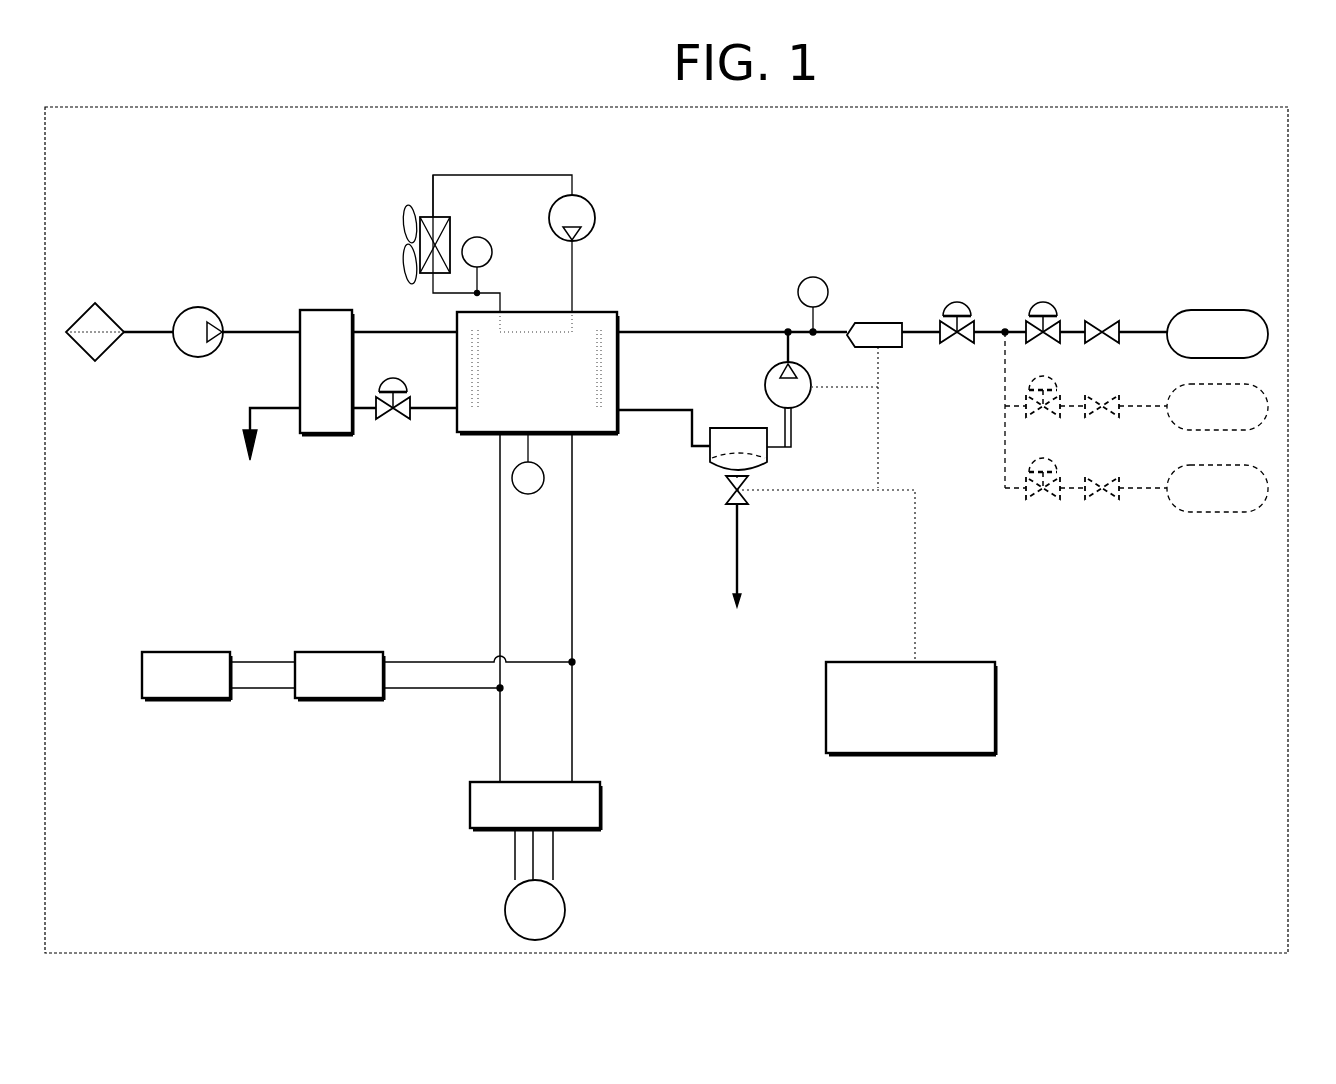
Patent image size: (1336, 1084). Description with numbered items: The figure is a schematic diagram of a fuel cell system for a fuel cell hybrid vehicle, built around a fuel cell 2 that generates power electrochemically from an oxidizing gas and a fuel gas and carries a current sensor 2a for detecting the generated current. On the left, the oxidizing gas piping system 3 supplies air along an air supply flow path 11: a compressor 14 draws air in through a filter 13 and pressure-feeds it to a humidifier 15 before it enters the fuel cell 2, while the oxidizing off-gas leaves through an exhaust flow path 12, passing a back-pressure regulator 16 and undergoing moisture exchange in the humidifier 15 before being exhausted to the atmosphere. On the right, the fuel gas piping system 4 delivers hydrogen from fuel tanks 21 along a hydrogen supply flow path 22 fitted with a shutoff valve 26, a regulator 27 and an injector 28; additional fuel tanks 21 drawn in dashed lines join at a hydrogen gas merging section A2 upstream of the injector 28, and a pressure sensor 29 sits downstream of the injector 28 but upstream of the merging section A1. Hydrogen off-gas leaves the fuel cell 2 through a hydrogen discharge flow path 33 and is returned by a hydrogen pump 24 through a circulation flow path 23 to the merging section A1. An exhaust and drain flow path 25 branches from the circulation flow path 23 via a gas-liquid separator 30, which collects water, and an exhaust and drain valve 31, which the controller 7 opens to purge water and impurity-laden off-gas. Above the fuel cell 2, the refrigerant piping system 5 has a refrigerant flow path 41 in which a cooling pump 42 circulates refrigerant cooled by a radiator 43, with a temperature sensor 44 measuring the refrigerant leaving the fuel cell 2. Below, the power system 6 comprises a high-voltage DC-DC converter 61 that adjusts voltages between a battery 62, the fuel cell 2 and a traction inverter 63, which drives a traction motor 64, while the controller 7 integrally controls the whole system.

The fuel cell 2 is at (478, 433).
The current sensor 2a is at (528, 496).
The oxidizing gas piping system 3 is at (249, 294).
The fuel gas piping system 4 is at (939, 251).
The refrigerant piping system 5 is at (388, 173).
The power system 6 is at (610, 559).
The controller 7 is at (940, 662).
The air supply flow path 11 is at (368, 331).
The exhaust flow path 12 is at (268, 412).
The filter 13 is at (107, 312).
The compressor 14 is at (197, 306).
The humidifier 15 is at (322, 310).
The back-pressure regulator 16 is at (400, 384).
The fuel tank 21 is at (1210, 311).
The hydrogen supply flow path 22 is at (702, 331).
The circulation flow path 23 is at (797, 440).
The hydrogen pump 24 is at (805, 400).
The exhaust and drain flow path 25 is at (735, 575).
The shutoff valve 26 is at (1102, 322).
The regulator 27 is at (957, 302).
The injector 28 is at (878, 323).
The pressure sensor 29 is at (814, 277).
The gas-liquid separator 30 is at (738, 428).
The exhaust and drain valve 31 is at (728, 496).
The hydrogen discharge flow path 33 is at (630, 412).
The refrigerant flow path 41 is at (545, 176).
The cooling pump 42 is at (595, 215).
The radiator 43 is at (404, 226).
The temperature sensor 44 is at (488, 243).
The high-voltage DC-DC converter 61 is at (344, 652).
The battery 62 is at (198, 652).
The traction inverter 63 is at (600, 812).
The traction motor 64 is at (566, 912).
The merging section A1 is at (788, 330).
The hydrogen gas merging section A2 is at (1005, 330).